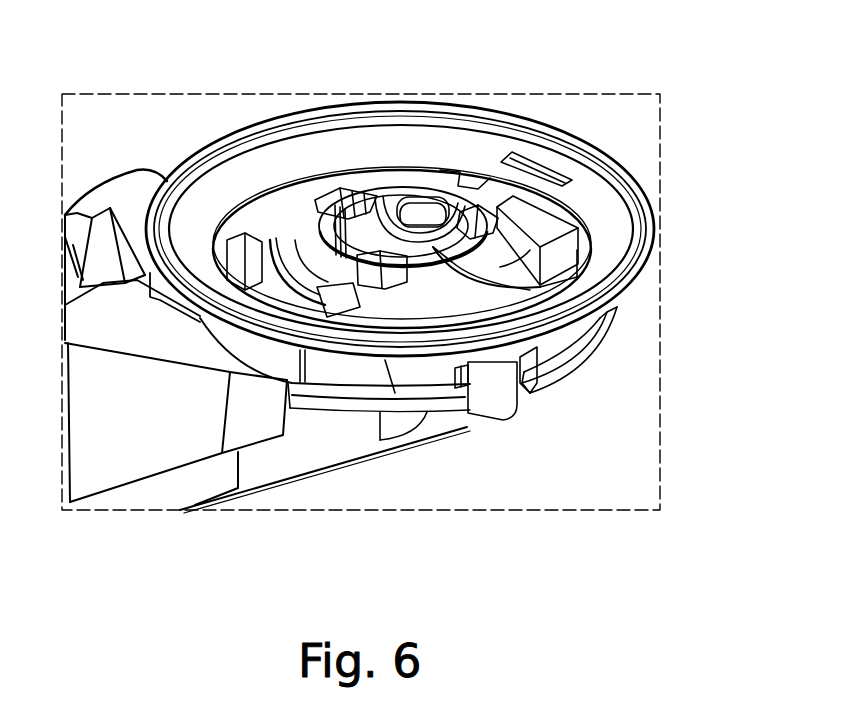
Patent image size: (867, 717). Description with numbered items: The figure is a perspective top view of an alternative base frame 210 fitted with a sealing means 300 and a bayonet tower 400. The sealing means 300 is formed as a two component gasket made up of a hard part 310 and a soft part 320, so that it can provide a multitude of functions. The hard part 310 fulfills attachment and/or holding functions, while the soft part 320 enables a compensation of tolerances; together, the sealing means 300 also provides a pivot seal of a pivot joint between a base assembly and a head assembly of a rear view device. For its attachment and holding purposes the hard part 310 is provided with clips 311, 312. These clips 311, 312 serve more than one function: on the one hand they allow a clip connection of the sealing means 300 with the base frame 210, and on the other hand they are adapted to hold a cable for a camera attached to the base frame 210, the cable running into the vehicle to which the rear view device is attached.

The base frame 210 is at (187, 525).
The sealing means 300 is at (676, 243).
The hard part 310 is at (403, 148).
The clip 311 is at (516, 158).
The clip 312 is at (507, 412).
The soft part 320 is at (563, 133).
The bayonet tower 400 is at (345, 180).